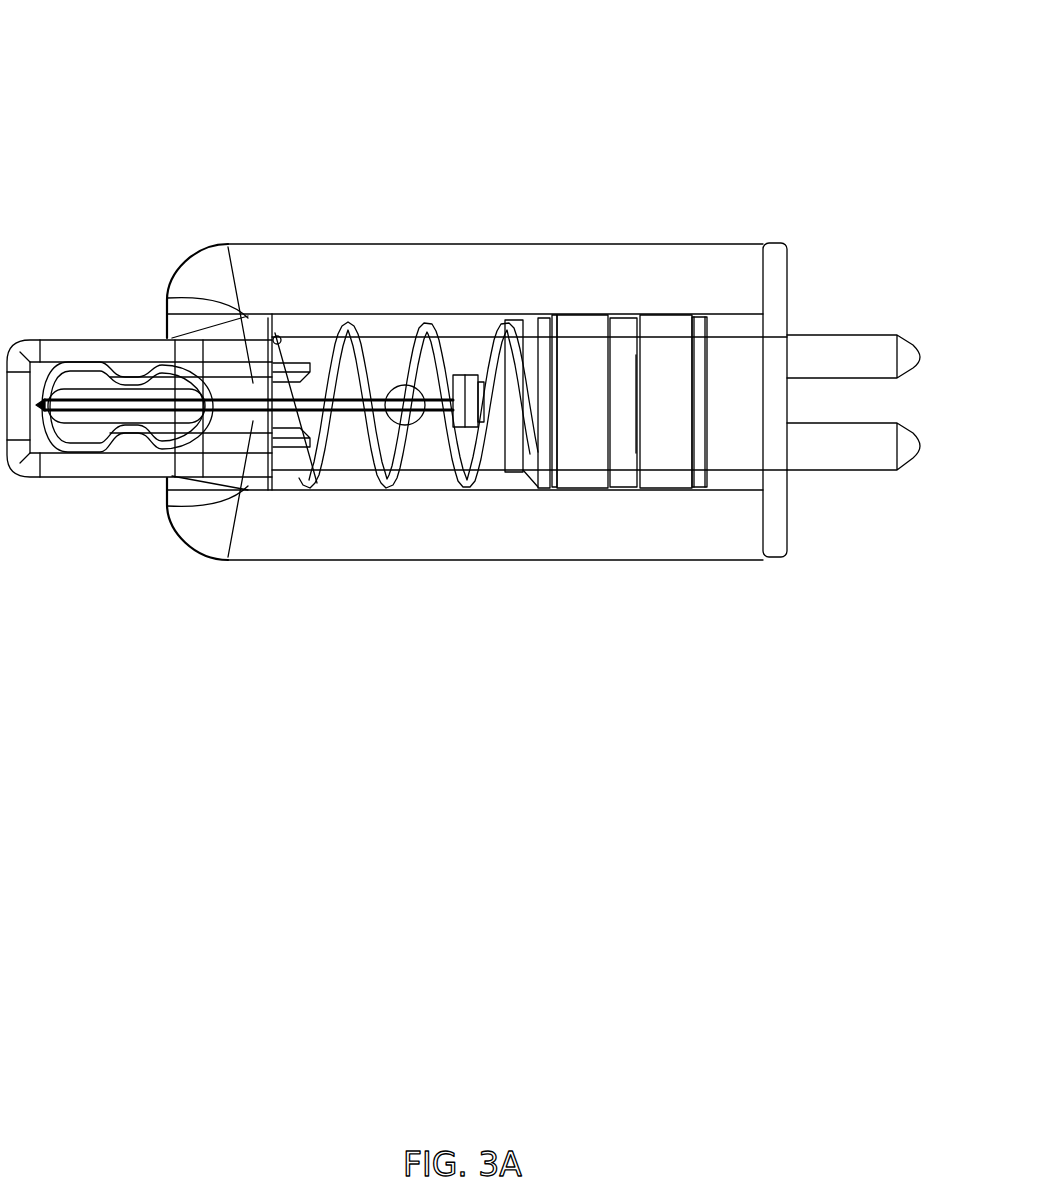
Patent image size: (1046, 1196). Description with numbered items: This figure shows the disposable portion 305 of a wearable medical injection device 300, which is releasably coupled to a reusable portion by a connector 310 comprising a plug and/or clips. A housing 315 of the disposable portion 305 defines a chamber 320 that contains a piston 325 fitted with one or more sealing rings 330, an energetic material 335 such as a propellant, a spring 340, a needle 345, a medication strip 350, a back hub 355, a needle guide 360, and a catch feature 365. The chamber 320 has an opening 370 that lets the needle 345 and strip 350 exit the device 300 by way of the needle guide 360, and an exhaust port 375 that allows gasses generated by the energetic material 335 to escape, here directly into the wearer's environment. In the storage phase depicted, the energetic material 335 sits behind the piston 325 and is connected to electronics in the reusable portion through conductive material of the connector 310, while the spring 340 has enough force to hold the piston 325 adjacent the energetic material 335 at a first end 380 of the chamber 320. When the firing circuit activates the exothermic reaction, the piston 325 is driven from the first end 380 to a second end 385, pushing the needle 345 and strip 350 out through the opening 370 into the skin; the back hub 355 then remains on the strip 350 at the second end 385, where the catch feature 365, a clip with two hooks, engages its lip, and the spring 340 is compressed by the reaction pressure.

The wearable medical injection device 300 is at (80, 90).
The disposable portion 305 is at (561, 222).
The connector 310 is at (823, 350).
The housing 315 is at (347, 268).
The chamber 320 is at (463, 348).
The piston 325 is at (624, 480).
The sealing rings 330 is at (662, 325).
The energetic material 335 is at (732, 325).
The spring 340 is at (390, 487).
The needle 345 is at (60, 477).
The medication strip 350 is at (125, 455).
The back hub 355 is at (530, 470).
The needle guide 360 is at (172, 300).
The catch feature 365 is at (292, 380).
The opening 370 is at (155, 392).
The exhaust port 375 is at (394, 378).
The first end 380 is at (715, 508).
The second end 385 is at (268, 505).